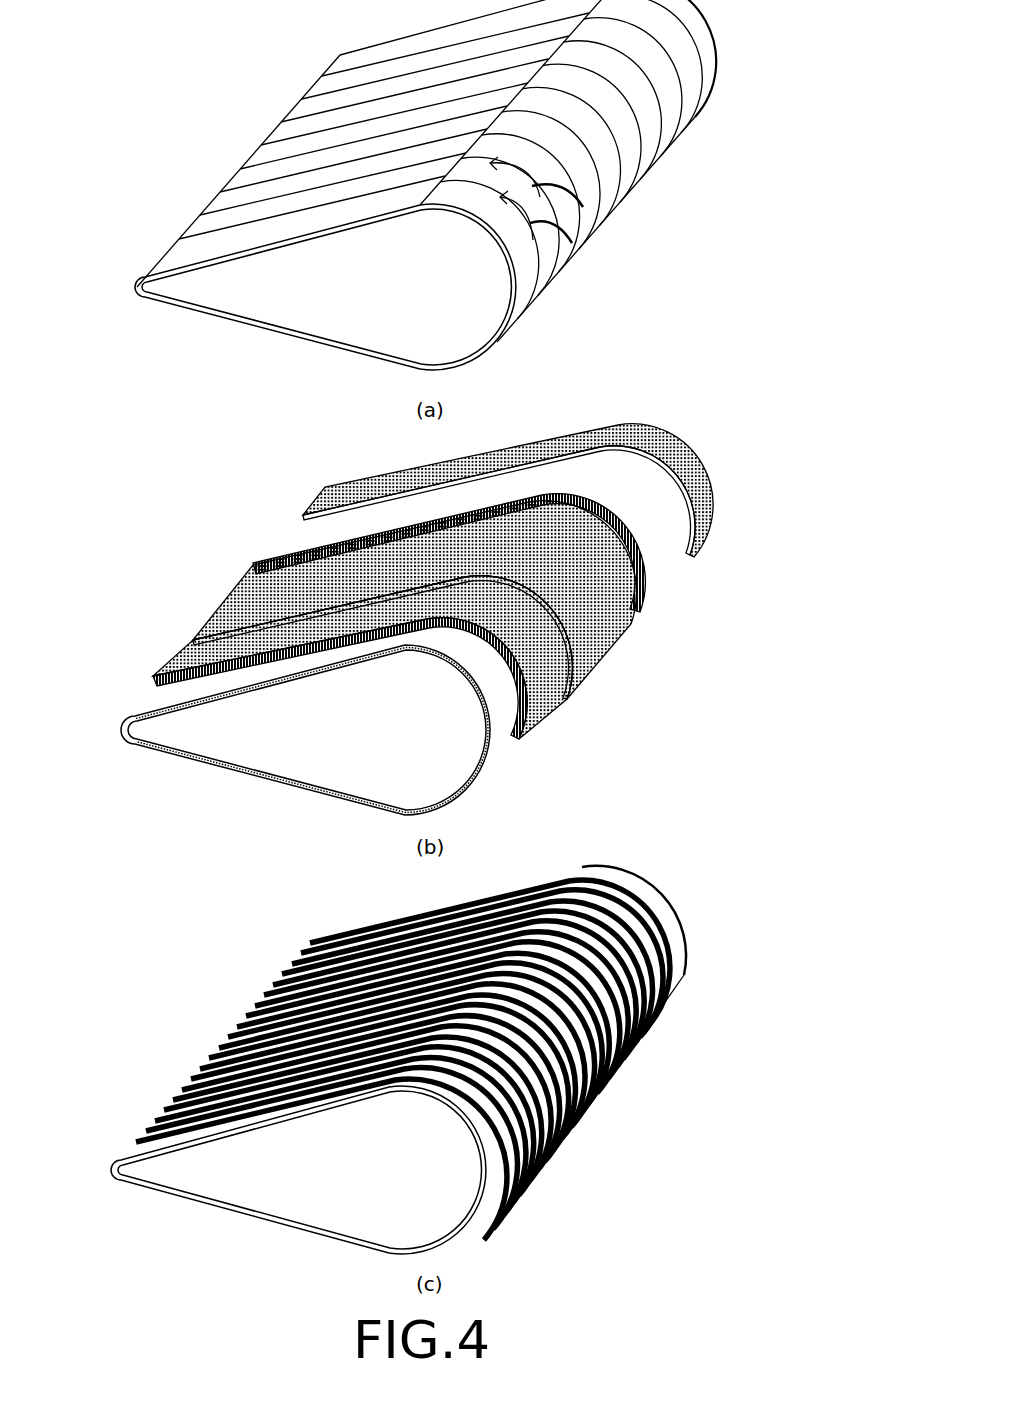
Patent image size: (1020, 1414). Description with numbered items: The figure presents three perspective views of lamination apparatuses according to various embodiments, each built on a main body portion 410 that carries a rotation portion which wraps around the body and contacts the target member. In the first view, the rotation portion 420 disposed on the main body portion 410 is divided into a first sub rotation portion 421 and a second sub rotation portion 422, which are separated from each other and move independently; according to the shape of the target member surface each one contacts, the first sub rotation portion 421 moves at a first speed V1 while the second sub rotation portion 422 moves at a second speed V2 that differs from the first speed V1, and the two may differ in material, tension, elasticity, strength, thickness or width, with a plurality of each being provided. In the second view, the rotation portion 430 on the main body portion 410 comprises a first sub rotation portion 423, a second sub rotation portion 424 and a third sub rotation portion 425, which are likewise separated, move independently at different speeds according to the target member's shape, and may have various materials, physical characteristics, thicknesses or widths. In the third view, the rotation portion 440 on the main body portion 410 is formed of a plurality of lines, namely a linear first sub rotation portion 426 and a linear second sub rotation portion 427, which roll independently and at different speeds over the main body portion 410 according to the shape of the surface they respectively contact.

The main body portion 410 is at (478, 317).
The rotation portion 420 is at (426, 196).
The first sub rotation portion 421 is at (527, 290).
The second sub rotation portion 422 is at (547, 280).
The first sub rotation portion 423 is at (369, 692).
The second sub rotation portion 424 is at (547, 713).
The third sub rotation portion 425 is at (600, 629).
The rotation portion 430 is at (433, 618).
The first sub rotation portion 426 is at (537, 1160).
The second sub rotation portion 427 is at (550, 1140).
The rotation portion 440 is at (411, 1053).
The first speed V1 is at (577, 257).
The second speed V2 is at (600, 227).